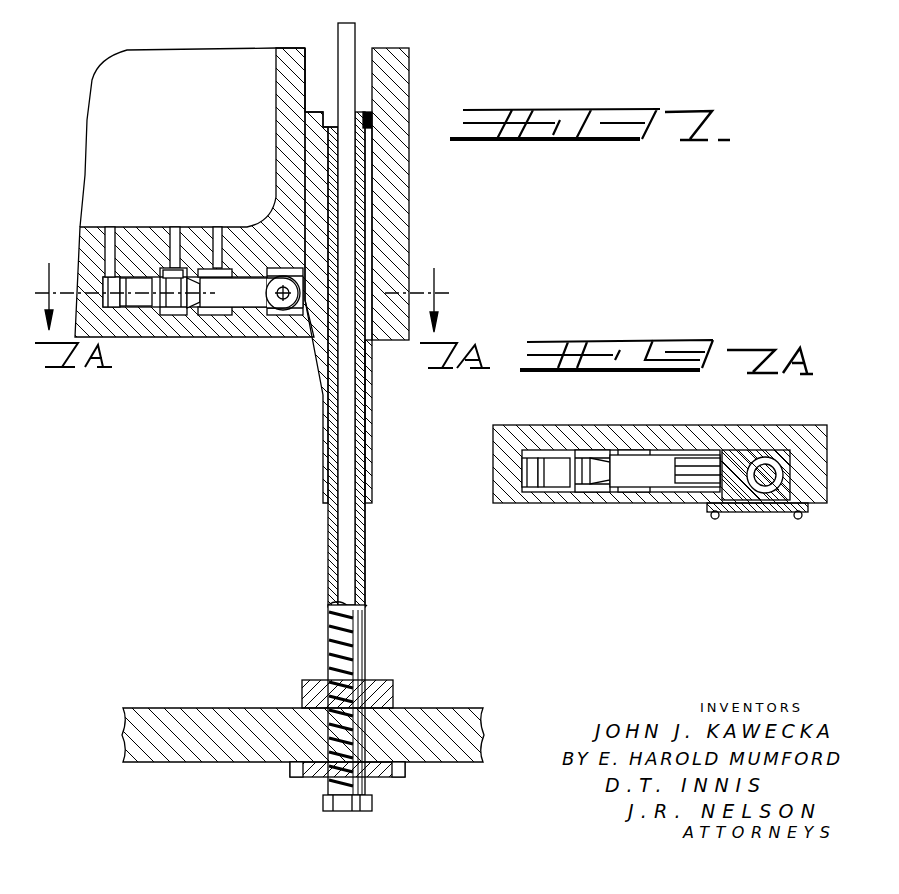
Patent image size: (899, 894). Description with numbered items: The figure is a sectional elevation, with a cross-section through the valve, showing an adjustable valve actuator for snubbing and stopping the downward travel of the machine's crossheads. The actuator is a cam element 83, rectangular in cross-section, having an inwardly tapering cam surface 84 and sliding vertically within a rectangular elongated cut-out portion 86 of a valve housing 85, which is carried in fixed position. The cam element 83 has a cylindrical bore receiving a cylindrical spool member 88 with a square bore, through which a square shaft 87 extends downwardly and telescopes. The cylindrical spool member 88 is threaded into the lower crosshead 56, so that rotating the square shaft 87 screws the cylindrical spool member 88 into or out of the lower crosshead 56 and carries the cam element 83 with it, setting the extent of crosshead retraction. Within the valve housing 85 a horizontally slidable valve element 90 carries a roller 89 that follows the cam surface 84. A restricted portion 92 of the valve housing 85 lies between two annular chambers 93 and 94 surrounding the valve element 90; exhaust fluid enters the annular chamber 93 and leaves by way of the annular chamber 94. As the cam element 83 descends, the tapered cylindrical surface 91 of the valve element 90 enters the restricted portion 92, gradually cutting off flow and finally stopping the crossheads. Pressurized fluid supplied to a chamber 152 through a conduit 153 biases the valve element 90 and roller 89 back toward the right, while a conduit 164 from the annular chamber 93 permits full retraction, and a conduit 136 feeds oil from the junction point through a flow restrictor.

In FIG. 7, the lower crosshead 56 is at (188, 720).
In FIG. 7, the cam element 83 is at (298, 133).
In FIG. 7A, the cam element 83 is at (738, 460).
In FIG. 7, the cam surface 84 is at (320, 382).
In FIG. 7, the valve housing 85 is at (150, 67).
In FIG. 7A, the valve housing 85 is at (538, 442).
In FIG. 7, the cut-out portion 86 is at (308, 68).
In FIG. 7, the square shaft 87 is at (350, 37).
In FIG. 7A, the square shaft 87 is at (765, 468).
In FIG. 7, the cylindrical spool member 88 is at (372, 118).
In FIG. 7A, the cylindrical spool member 88 is at (778, 453).
In FIG. 7, the roller 89 is at (305, 317).
In FIG. 7A, the roller 89 is at (693, 467).
In FIG. 7, the valve element 90 is at (237, 280).
In FIG. 7A, the valve element 90 is at (660, 477).
In FIG. 7, the tapered cylindrical surface 91 is at (180, 277).
In FIG. 7A, the tapered cylindrical surface 91 is at (607, 460).
In FIG. 7, the restricted portion 92 is at (197, 313).
In FIG. 7, the annular chamber 93 is at (217, 313).
In FIG. 7A, the annular chamber 93 is at (637, 492).
In FIG. 7, the annular chamber 94 is at (173, 310).
In FIG. 7A, the annular chamber 94 is at (590, 492).
In FIG. 7, the conduit 136 is at (173, 243).
In FIG. 7, the chamber 152 is at (100, 277).
In FIG. 7A, the chamber 152 is at (527, 470).
In FIG. 7, the conduit 153 is at (113, 227).
In FIG. 7, the conduit 164 is at (217, 240).